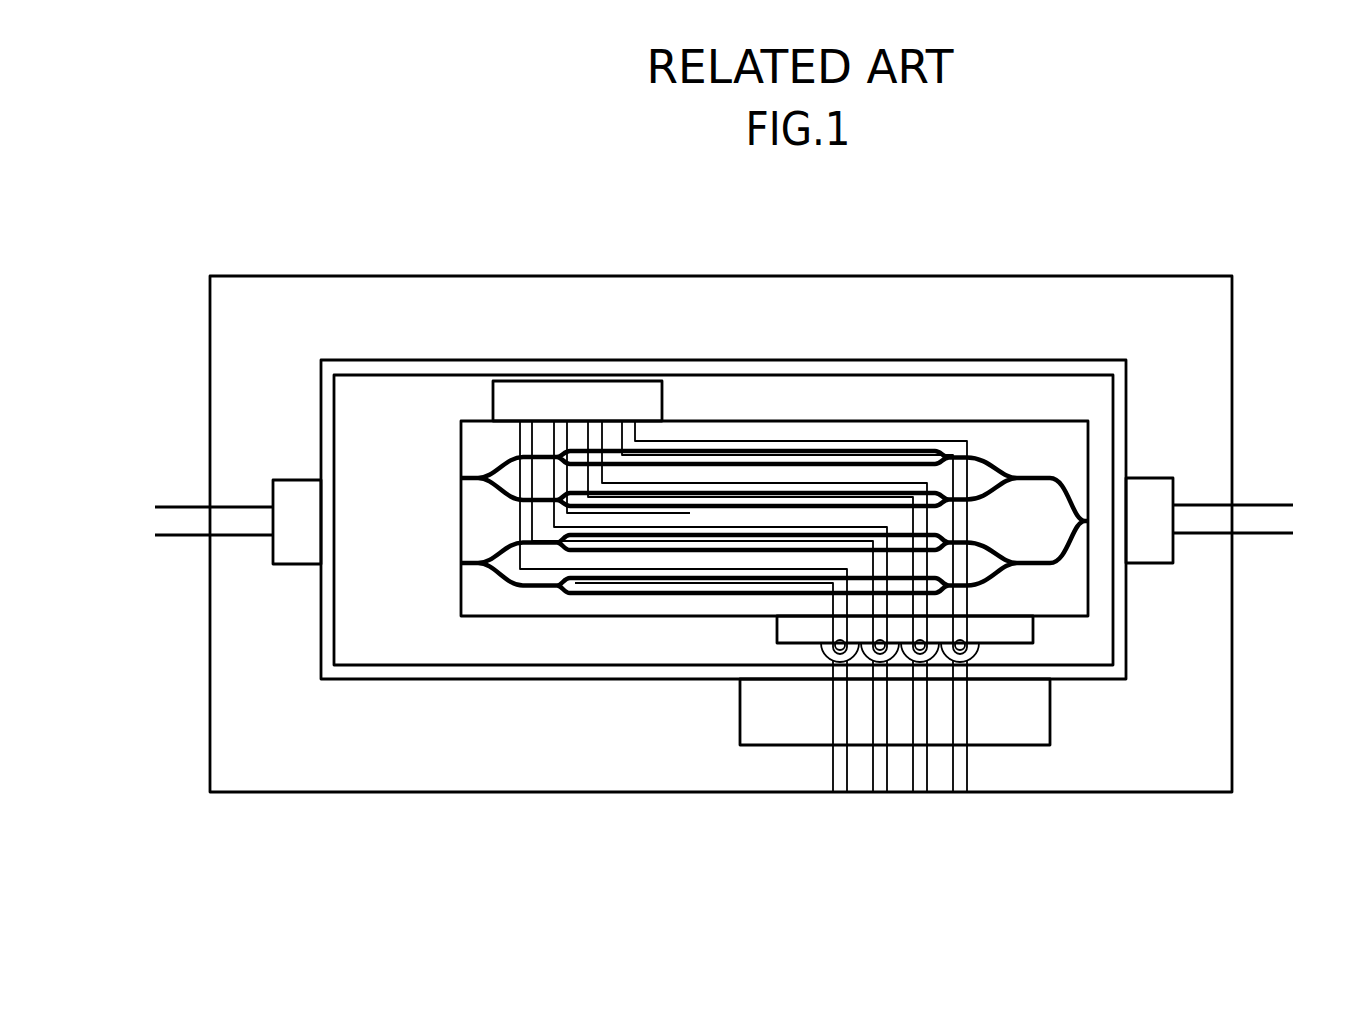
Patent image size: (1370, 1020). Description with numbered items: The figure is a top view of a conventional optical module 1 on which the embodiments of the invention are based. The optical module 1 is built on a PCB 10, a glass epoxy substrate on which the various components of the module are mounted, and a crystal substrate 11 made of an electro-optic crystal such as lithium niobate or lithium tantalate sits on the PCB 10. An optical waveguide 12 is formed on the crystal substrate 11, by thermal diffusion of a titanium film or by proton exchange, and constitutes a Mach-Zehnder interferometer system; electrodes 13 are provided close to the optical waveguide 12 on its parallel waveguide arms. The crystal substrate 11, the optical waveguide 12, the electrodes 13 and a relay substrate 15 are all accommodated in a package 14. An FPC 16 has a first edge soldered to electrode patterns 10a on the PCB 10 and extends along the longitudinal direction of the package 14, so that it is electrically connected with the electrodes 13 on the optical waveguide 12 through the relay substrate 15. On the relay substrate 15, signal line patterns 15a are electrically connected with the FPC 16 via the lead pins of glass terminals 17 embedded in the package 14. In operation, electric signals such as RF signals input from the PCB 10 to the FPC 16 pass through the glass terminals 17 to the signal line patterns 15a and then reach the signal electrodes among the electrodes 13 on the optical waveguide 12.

The optical module 1 is at (1133, 251).
The PCB 10 is at (961, 276).
The electrode patterns 10a is at (833, 768).
The crystal substrate 11 is at (1072, 591).
The optical waveguide 12 is at (1065, 486).
The electrodes 13 is at (529, 256).
The package 14 is at (1128, 573).
The relay substrate 15 is at (1033, 628).
The signal line patterns 15a is at (833, 625).
The FPC 16 is at (767, 746).
The glass terminals 17 is at (823, 649).